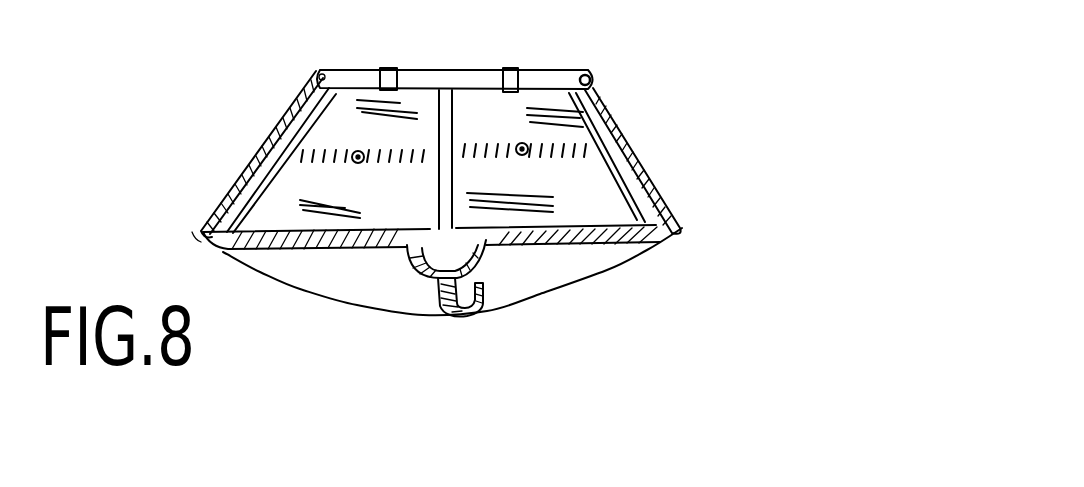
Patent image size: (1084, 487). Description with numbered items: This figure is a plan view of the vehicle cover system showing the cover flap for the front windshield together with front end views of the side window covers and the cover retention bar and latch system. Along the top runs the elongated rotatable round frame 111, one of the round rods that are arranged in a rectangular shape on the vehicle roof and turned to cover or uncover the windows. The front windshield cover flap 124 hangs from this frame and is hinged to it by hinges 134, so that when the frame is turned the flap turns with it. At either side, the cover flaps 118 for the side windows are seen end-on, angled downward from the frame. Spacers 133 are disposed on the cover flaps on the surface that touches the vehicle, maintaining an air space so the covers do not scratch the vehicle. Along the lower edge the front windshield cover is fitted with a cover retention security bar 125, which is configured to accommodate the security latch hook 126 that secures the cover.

The elongated rotatable round frame 111 is at (318, 72).
The hinge 134 is at (533, 70).
The cover flap for side window 118 is at (612, 128).
The cover flap for front windshield 124 is at (332, 186).
The spacer 133 is at (530, 152).
The cover retention security bar 125 is at (598, 240).
The security latch hook 126 is at (478, 308).